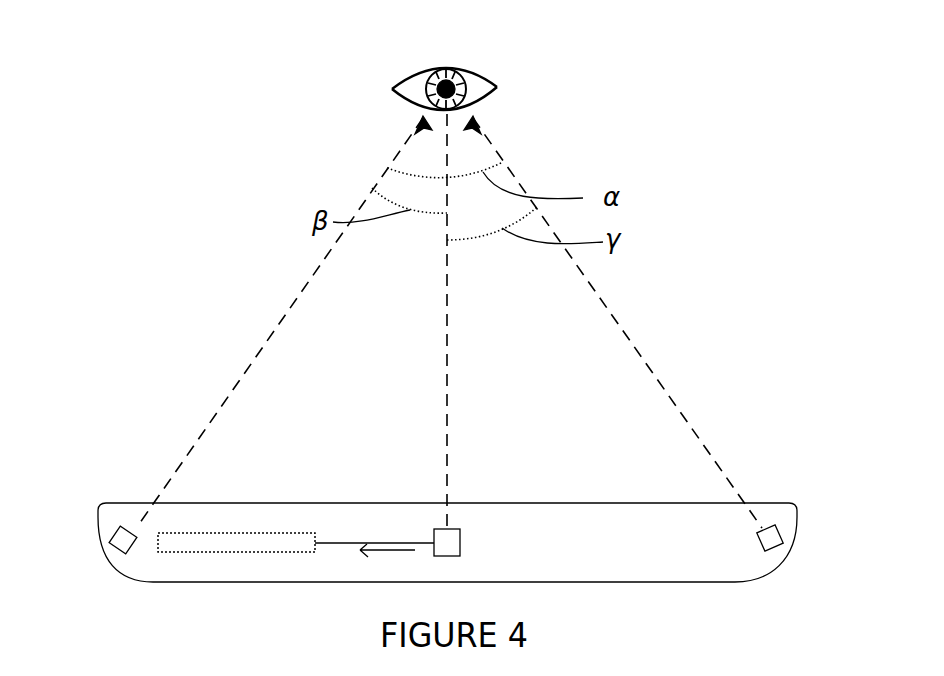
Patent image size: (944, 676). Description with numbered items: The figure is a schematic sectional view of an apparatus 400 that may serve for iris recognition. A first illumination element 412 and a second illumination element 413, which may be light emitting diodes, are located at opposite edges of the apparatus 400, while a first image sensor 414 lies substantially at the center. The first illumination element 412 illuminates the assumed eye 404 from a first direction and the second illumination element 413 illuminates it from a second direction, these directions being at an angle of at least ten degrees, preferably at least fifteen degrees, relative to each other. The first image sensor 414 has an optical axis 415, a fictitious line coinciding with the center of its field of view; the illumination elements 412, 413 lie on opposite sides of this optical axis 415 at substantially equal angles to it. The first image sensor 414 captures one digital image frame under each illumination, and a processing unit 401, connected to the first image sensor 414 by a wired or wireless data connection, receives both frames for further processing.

The apparatus 400 is at (133, 575).
The processing unit 401 is at (237, 533).
The assumed eye 404 is at (470, 70).
The first illumination element 412 is at (120, 540).
The second illumination element 413 is at (770, 540).
The first image sensor 414 is at (461, 542).
The optical axis 415 is at (447, 358).